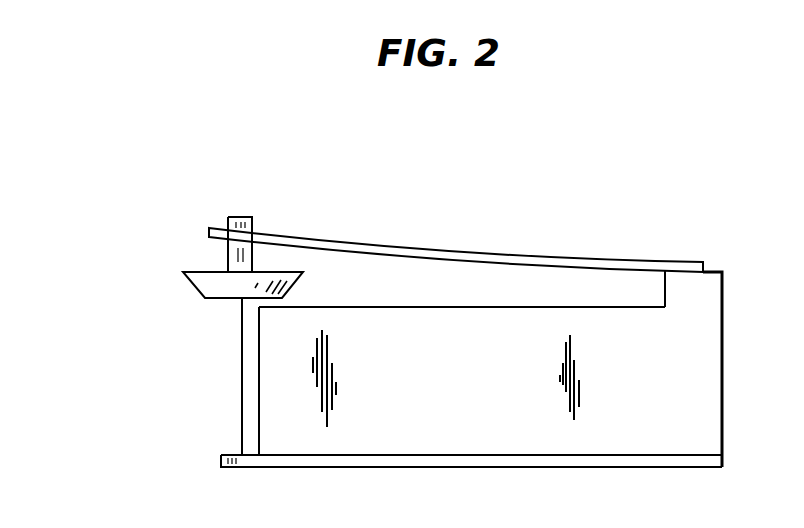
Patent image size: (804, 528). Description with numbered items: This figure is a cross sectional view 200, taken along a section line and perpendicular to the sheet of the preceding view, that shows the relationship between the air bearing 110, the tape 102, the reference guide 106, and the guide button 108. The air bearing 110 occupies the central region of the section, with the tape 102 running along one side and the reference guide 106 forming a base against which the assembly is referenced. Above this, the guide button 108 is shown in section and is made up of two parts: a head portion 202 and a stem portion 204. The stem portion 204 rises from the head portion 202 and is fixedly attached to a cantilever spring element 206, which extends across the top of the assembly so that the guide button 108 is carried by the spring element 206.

The cross sectional view 200 is at (558, 137).
The tape 102 is at (241, 433).
The reference guide 106 is at (308, 467).
The air bearing 110 is at (493, 402).
The guide button 108 is at (183, 276).
The head portion 202 is at (281, 270).
The stem portion 204 is at (241, 216).
The cantilever spring element 206 is at (537, 257).